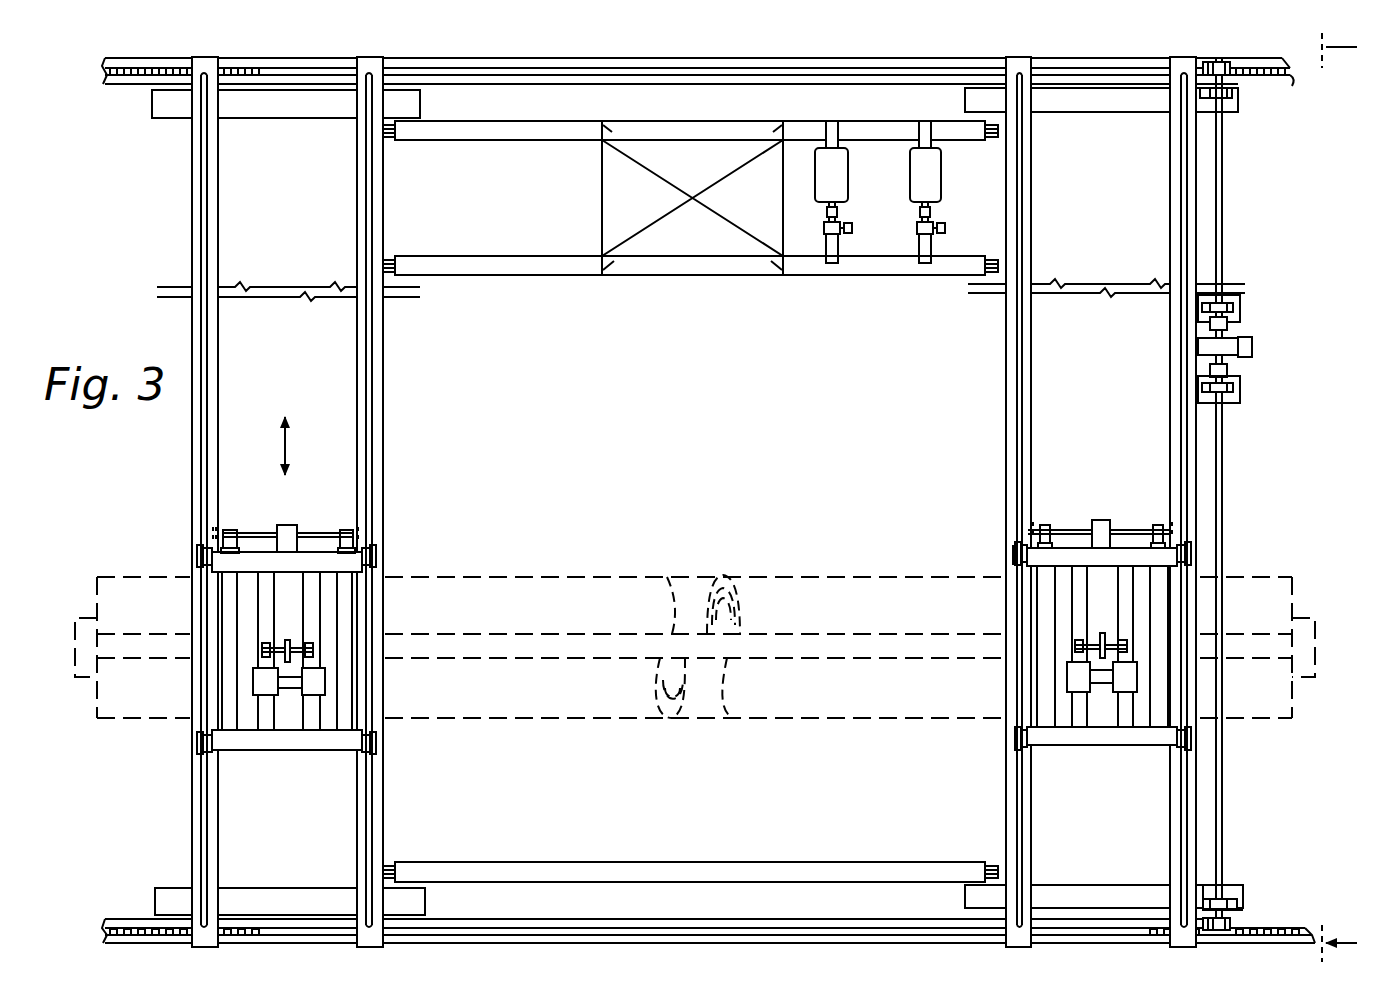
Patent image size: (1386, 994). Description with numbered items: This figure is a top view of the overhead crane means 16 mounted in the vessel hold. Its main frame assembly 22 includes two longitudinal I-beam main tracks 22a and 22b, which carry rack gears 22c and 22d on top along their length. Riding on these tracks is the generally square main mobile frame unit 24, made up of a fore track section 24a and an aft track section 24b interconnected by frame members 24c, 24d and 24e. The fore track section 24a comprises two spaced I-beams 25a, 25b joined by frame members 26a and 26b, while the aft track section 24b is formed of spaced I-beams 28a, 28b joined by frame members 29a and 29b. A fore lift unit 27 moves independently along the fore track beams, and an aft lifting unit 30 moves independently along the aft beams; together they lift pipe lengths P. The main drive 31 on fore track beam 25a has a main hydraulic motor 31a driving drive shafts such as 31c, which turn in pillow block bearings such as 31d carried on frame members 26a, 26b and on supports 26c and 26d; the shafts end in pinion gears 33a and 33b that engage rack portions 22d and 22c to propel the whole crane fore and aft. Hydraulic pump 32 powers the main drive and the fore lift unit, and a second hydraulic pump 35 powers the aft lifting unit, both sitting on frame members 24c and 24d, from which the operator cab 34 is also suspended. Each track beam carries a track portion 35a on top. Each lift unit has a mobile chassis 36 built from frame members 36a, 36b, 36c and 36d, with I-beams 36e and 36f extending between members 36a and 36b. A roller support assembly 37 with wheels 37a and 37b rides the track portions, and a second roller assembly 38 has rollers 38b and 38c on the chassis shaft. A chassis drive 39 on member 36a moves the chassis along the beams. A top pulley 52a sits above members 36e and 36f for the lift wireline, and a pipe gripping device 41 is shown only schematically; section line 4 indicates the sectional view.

The overhead crane means 16 is at (1234, 223).
The main frame assembly 22 is at (326, 56).
The main track 22a is at (500, 936).
The main track 22b is at (682, 62).
The rack gear 22c is at (1272, 922).
The rack gear 22d is at (1283, 78).
The main mobile frame unit 24 is at (192, 217).
The fore track section 24a is at (1006, 427).
The aft track section 24b is at (384, 381).
The frame member 24c is at (459, 140).
The frame member 24d is at (480, 276).
The frame member 24e is at (503, 868).
The fore track beam 25a is at (1180, 804).
The fore track beam 25b is at (1031, 834).
The frame member 26a is at (1148, 893).
The frame member 26b is at (1098, 112).
The support 26c is at (1242, 396).
The support 26d is at (1240, 298).
The fore lift unit 27 is at (1072, 505).
The aft track beam 28a is at (218, 813).
The aft track beam 28b is at (357, 836).
The frame member 29a is at (234, 898).
The frame member 29b is at (253, 118).
The aft lifting unit 30 is at (305, 430).
The main drive 31 is at (1262, 322).
The main hydraulic motor 31a is at (1254, 349).
The drive shaft 31c is at (1222, 176).
The pillow block bearing 31d is at (1225, 904).
The hydraulic pump 32 is at (910, 186).
The pinion gear 33a is at (1218, 62).
The pinion gear 33b is at (1225, 930).
The operator cab 34 is at (698, 240).
The second hydraulic pump 35 is at (838, 166).
The track portion 35a is at (384, 418).
The mobile chassis 36 is at (298, 738).
The chassis frame member 36a is at (316, 552).
The chassis frame member 36b is at (228, 745).
The chassis frame member 36c is at (227, 607).
The chassis frame member 36d is at (345, 592).
The chassis frame member 36e is at (1070, 598).
The chassis frame member 36f is at (1123, 572).
The roller support assembly 37 is at (1173, 731).
The wheel 37a is at (370, 745).
The wheel 37b is at (205, 746).
The second roller assembly 38 is at (1063, 532).
The roller 38b is at (1190, 556).
The roller 38c is at (1013, 556).
The chassis drive 39 is at (1100, 520).
The pipe gripping device 41 is at (1318, 640).
The top pulley 52a is at (283, 648).
The section line 4- 4 is at (1348, 499).
The pipe length P is at (567, 577).